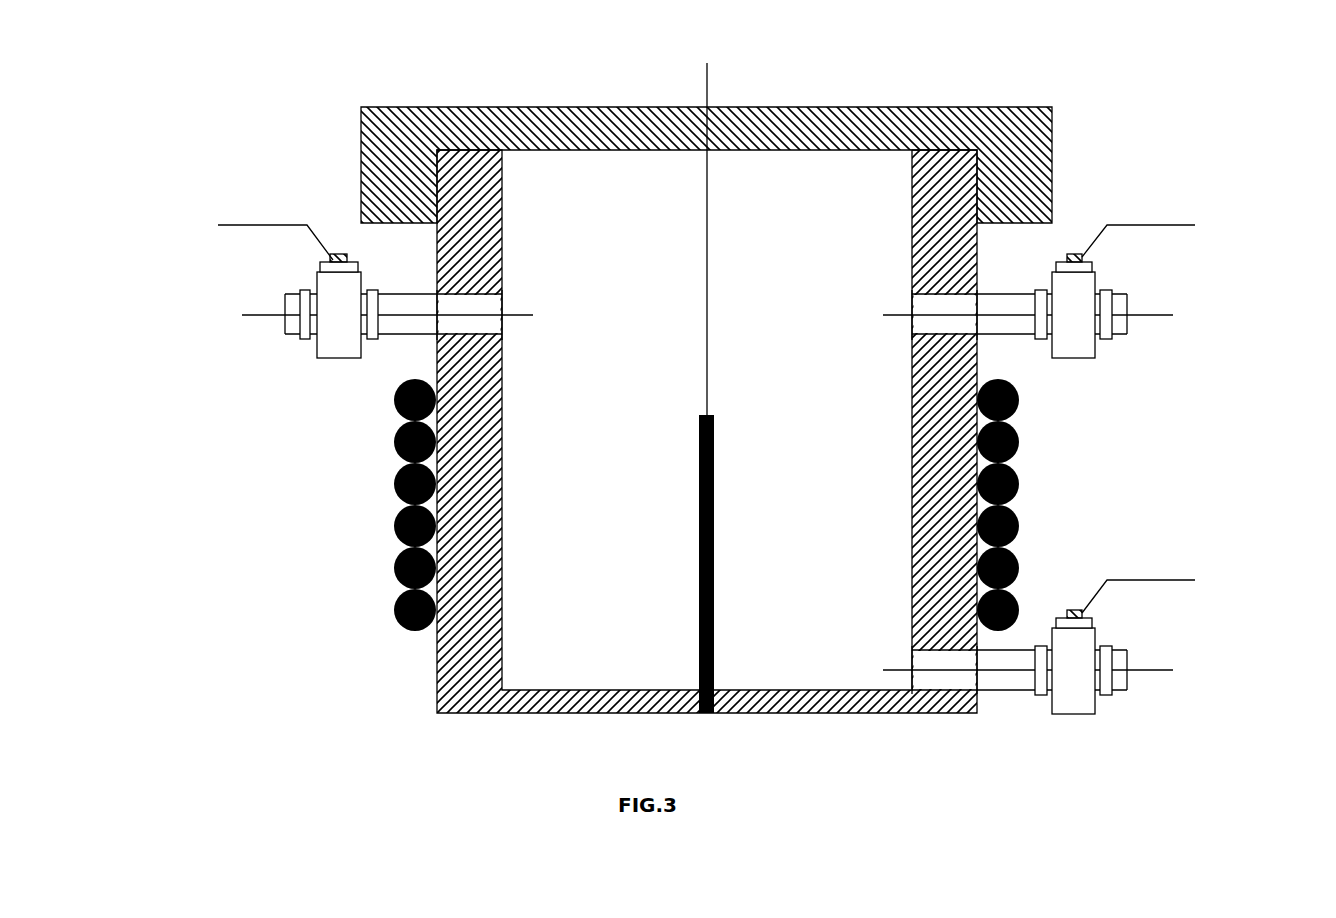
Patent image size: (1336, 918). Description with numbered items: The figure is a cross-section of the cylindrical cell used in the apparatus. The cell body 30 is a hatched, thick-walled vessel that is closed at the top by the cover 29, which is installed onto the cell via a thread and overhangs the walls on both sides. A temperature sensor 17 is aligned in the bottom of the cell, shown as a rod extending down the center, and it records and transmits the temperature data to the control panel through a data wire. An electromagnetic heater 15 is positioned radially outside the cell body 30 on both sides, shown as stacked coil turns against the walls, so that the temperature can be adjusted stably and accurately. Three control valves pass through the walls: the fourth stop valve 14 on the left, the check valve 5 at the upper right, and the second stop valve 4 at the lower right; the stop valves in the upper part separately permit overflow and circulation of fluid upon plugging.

The cover 29 is at (395, 162).
The cell body 30 is at (463, 680).
The fourth stop valve 14 is at (340, 303).
The heater 15 is at (397, 473).
The temperature sensor 17 is at (713, 492).
The check valve 5 is at (1080, 285).
The second stop valve 4 is at (1080, 647).